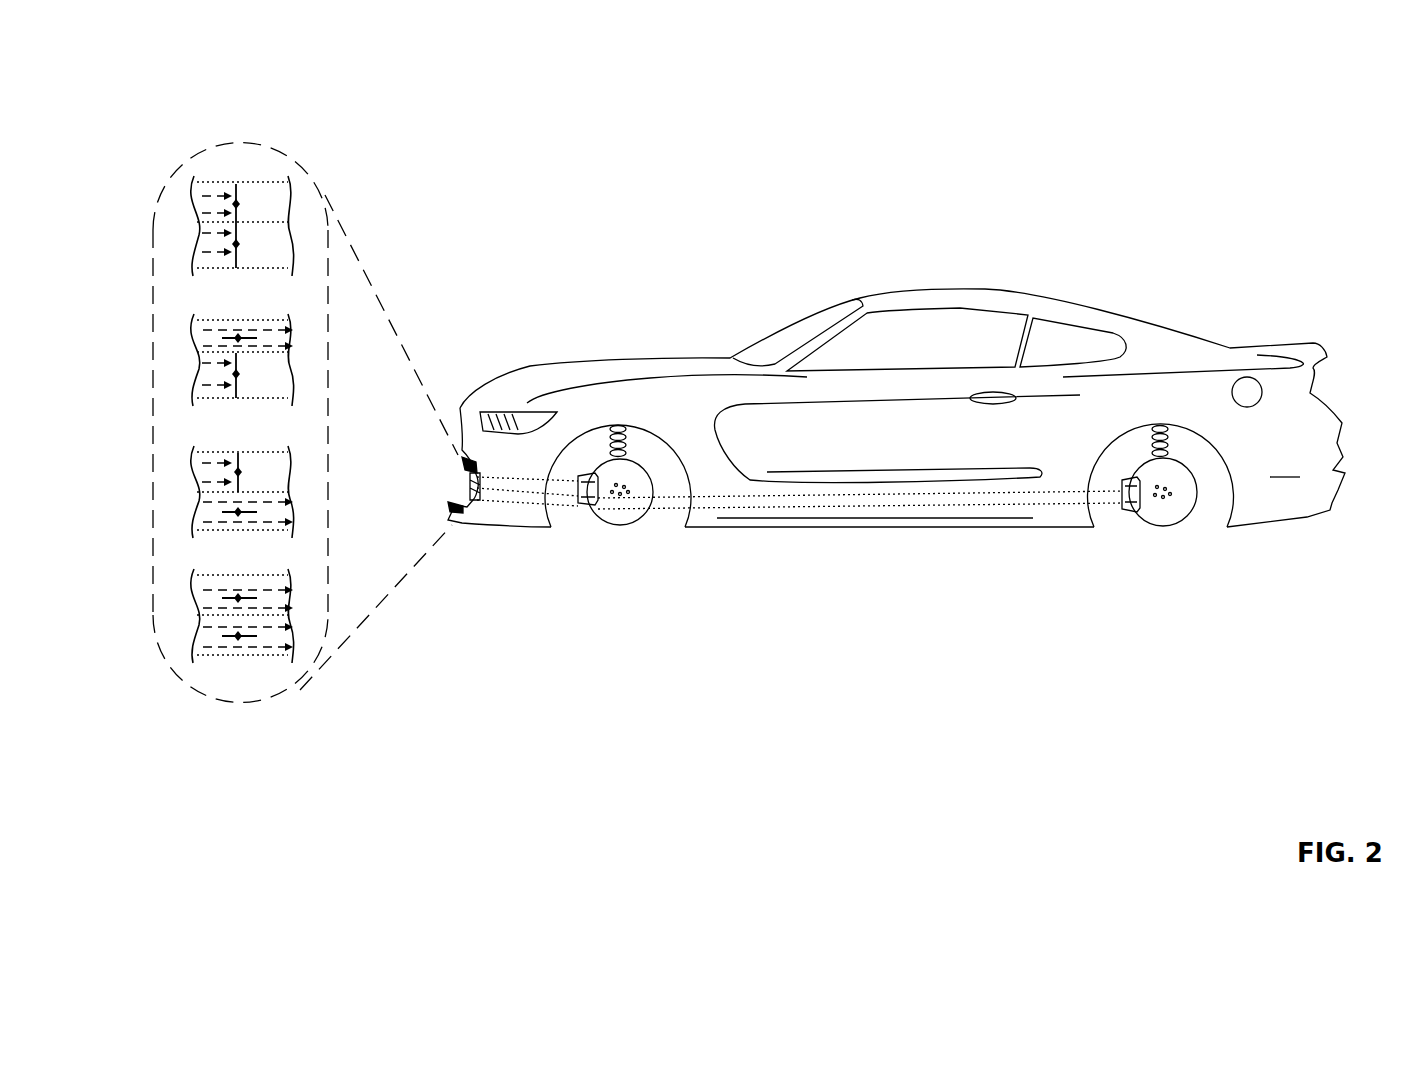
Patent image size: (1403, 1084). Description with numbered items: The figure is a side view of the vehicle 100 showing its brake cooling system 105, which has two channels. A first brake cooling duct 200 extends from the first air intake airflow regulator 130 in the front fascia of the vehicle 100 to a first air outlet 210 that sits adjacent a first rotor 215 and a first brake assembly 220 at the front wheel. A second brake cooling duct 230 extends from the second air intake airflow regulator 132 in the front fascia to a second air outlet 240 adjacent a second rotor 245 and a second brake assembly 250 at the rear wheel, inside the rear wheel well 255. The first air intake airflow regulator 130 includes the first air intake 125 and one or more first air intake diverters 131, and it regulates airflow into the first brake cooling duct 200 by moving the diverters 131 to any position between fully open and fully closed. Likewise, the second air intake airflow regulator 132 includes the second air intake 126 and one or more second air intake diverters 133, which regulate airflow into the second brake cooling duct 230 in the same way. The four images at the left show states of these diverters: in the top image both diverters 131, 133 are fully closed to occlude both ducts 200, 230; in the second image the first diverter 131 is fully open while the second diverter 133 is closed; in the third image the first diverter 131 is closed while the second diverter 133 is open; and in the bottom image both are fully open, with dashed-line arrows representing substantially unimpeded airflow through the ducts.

The vehicle 100 is at (1222, 310).
The brake cooling system 105 is at (872, 557).
The first air intake 125 is at (493, 540).
The second air intake 126 is at (463, 492).
The first air intake airflow regulator 130 is at (462, 452).
The first air intake diverter 131 is at (236, 232).
The second air intake airflow regulator 132 is at (455, 510).
The second air intake diverter 133 is at (232, 230).
The first brake cooling duct 200 is at (198, 192).
The first air outlet 210 is at (598, 464).
The first rotor 215 is at (620, 517).
The first brake assembly 220 is at (578, 528).
The second brake cooling duct 230 is at (274, 258).
The second air outlet 240 is at (1140, 492).
The second rotor 245 is at (1128, 470).
The second brake assembly 250 is at (1130, 510).
The rear wheel well 255 is at (1200, 503).